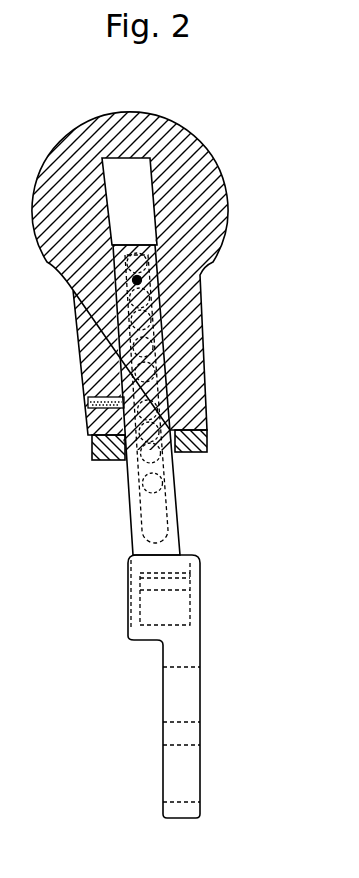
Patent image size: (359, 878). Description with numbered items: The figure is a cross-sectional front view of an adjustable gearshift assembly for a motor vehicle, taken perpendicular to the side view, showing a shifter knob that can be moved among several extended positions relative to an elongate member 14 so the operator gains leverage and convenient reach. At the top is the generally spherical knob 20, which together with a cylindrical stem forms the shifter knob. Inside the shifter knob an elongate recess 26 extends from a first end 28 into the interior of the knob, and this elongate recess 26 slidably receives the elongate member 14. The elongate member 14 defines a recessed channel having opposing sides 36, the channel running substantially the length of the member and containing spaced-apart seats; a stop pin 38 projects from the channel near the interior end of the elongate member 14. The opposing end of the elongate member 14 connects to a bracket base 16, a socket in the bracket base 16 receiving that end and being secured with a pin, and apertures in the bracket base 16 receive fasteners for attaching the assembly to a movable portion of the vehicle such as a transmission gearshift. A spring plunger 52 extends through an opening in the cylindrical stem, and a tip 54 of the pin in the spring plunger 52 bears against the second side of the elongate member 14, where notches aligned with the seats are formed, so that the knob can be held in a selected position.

The spherical knob 20 is at (181, 118).
The elongate recess 26 is at (138, 212).
The stop pin 38 is at (141, 279).
The spring plunger 52 is at (88, 412).
The tip 54 is at (93, 460).
The first end 28 is at (180, 458).
The opposing sides 36 is at (170, 503).
The elongate member 14 is at (178, 536).
The bracket base 16 is at (195, 645).